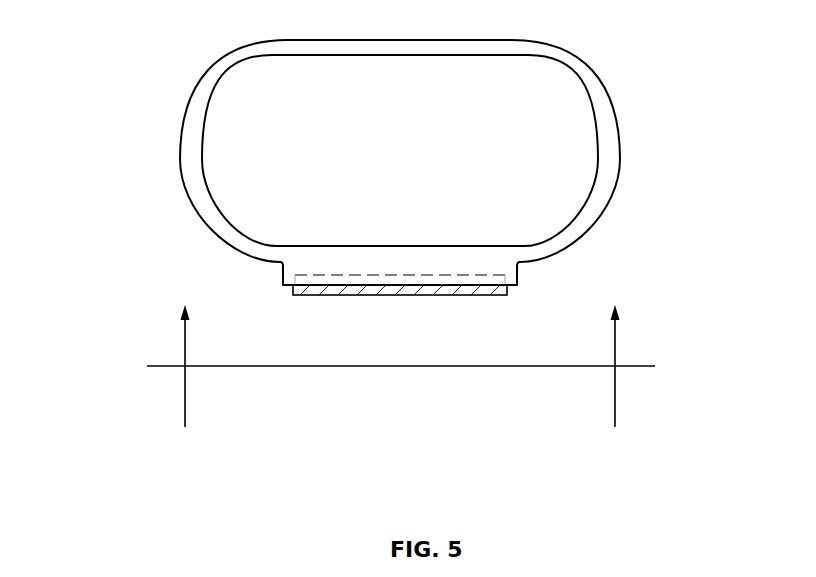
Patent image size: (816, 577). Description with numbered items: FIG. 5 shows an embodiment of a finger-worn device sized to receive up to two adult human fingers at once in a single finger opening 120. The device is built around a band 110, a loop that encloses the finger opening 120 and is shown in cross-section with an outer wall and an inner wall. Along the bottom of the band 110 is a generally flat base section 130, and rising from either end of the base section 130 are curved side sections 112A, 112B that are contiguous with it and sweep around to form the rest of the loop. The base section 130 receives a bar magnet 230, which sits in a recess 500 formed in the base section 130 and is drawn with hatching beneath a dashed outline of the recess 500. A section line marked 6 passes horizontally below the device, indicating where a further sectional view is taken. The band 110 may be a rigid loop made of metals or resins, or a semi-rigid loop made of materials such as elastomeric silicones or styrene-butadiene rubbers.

The band 110 is at (195, 87).
The finger opening 120 is at (298, 57).
The base section 130 is at (474, 253).
The curved side section 112A is at (148, 155).
The curved side section 112B is at (650, 155).
The bar magnet 230 is at (288, 296).
The recess 500 is at (505, 297).
The section line 6- 6 is at (401, 366).